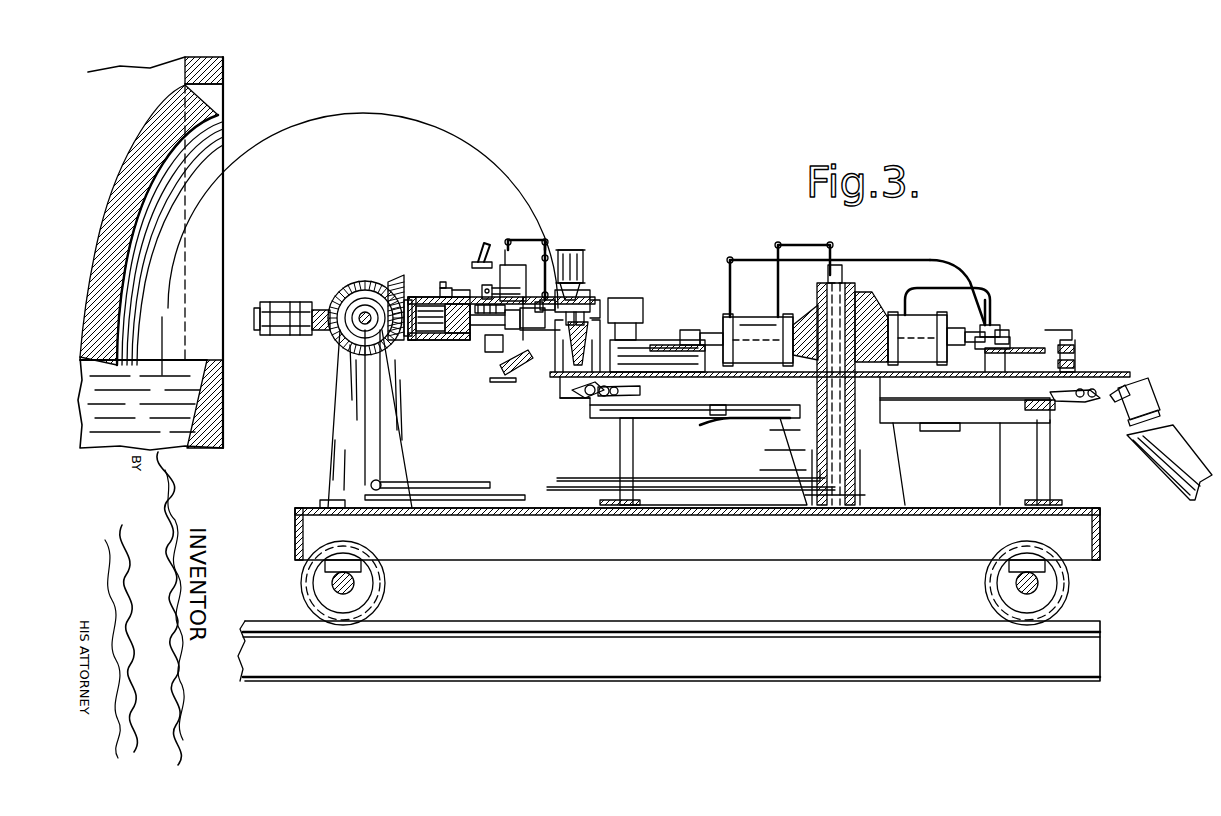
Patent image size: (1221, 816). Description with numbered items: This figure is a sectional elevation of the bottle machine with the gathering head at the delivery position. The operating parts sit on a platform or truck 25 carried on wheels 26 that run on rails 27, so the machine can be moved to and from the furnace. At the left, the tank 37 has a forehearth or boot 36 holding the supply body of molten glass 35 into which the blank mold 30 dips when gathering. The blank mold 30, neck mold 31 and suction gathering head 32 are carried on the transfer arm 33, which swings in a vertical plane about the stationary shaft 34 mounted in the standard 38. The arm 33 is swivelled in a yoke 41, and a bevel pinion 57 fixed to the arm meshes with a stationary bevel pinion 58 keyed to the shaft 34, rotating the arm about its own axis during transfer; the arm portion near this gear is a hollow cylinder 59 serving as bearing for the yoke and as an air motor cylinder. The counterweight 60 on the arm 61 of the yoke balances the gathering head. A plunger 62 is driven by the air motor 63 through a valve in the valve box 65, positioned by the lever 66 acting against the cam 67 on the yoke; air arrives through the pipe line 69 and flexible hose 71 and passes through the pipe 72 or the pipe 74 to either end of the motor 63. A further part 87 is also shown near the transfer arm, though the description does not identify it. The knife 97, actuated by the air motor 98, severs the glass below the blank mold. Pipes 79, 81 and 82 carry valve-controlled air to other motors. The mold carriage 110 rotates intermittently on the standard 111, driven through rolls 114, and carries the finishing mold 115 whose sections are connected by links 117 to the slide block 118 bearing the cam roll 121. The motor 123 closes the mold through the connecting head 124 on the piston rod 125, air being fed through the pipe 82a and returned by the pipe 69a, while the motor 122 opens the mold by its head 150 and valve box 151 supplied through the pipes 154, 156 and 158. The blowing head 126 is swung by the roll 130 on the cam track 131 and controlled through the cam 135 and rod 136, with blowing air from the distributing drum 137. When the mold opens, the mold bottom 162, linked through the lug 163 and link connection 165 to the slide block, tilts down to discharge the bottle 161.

The platform or truck 25 is at (470, 560).
The wheels 26 is at (386, 585).
The rails 27 is at (508, 622).
The blank mold 30 is at (555, 362).
The neck mold or ring 31 is at (584, 325).
The suction gathering head 32 is at (584, 292).
The transfer arm 33 is at (488, 292).
The stationary horizontal shaft 34 is at (352, 330).
The supply body of molten glass 35 is at (152, 419).
The forehearth or boot 36 is at (222, 421).
The tank 37 is at (218, 212).
The standard 38 is at (400, 434).
The yoke 41 is at (460, 346).
The bevel pinion 57 is at (404, 284).
The stationary bevel pinion 58 is at (358, 283).
The hollow cylinder 59 is at (442, 346).
The adjustable counterweight 60 is at (296, 304).
The arm 61 is at (320, 308).
The plunger 62 is at (598, 302).
The air motor 63 is at (585, 268).
The valve box 65 is at (505, 250).
The lever 66 is at (470, 290).
The cam 67 is at (444, 290).
The pipe line 69 is at (705, 487).
The pipe 69a is at (727, 272).
The flexible hose 71 is at (476, 252).
The pipe 72 is at (520, 240).
The pipe 74 is at (542, 240).
The pipe 79 is at (455, 484).
The pipe 81 is at (500, 495).
The pipe 82 is at (705, 478).
The pipe 82a is at (800, 242).
The block 87 is at (448, 296).
The knife 97 is at (508, 375).
The air motor 98 is at (495, 356).
The mold carriage 110 is at (565, 378).
The standard 111 is at (775, 452).
The rolls 114 is at (725, 420).
The finishing mold 115 is at (680, 345).
The links 117 is at (700, 348).
The slide block 118 is at (705, 378).
The cam roll 121 is at (692, 330).
The air motor 122 is at (920, 318).
The air motor 123 is at (760, 318).
The connecting head 124 is at (708, 330).
The piston rod 125 is at (760, 362).
The blowing head 126 is at (643, 309).
The cam engaging roll 130 is at (660, 420).
The stationary cam track 131 is at (672, 422).
The stationary cam 135 is at (705, 422).
The rod 136 is at (618, 412).
The distributing head or drum 137 is at (910, 425).
The head 150 is at (1008, 334).
The valve box 151 is at (1000, 325).
The pipe 154 is at (890, 260).
The pipe 156 is at (990, 300).
The pipe 158 is at (976, 290).
The bottle 161 is at (1152, 395).
The mold bottom 162 is at (572, 393).
The lug 163 is at (1005, 405).
The link connection 165 is at (695, 392).